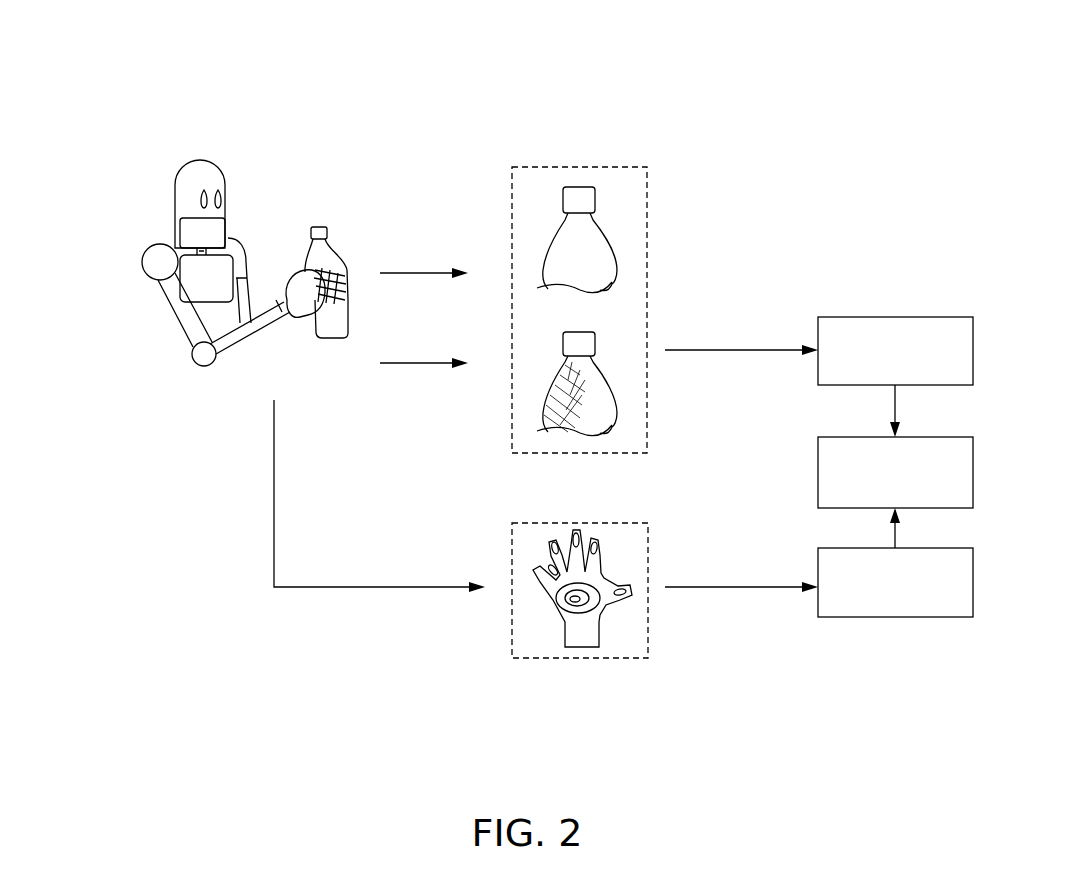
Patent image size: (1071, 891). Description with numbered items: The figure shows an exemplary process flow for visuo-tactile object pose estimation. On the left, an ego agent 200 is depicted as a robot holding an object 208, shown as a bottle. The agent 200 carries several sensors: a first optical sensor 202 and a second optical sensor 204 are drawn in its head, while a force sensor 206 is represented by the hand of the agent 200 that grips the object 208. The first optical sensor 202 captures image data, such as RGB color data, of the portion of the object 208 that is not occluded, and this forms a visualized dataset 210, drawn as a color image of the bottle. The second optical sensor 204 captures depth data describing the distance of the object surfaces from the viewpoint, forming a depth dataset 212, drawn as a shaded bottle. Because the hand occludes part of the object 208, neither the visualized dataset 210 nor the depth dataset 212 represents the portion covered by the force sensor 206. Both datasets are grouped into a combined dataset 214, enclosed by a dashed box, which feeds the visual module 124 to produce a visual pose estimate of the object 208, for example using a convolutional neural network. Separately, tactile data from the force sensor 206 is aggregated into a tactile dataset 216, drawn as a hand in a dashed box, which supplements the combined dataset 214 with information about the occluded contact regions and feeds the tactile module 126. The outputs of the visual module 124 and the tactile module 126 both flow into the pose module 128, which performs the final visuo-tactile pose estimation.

The agent 200 is at (126, 57).
The first optical sensor 202 is at (204, 191).
The second optical sensor 204 is at (218, 191).
The force sensor 206 is at (312, 251).
The object 208 is at (328, 231).
The visualized dataset 210 is at (556, 228).
The depth dataset 212 is at (556, 368).
The combined dataset 214 is at (655, 194).
The tactile dataset 216 is at (655, 548).
The visual module 124 is at (895, 351).
The tactile module 126 is at (895, 582).
The pose module 128 is at (895, 472).